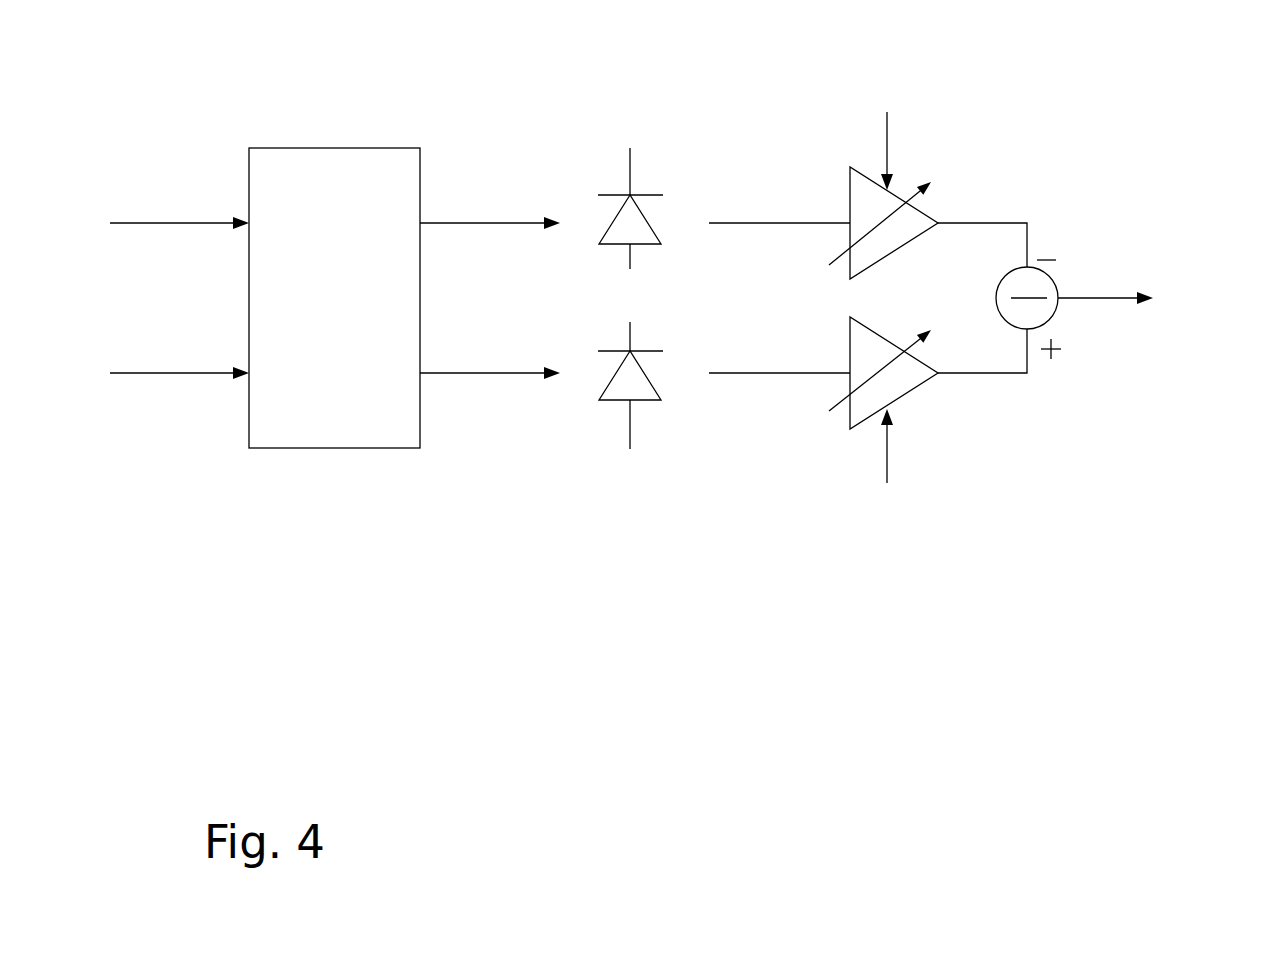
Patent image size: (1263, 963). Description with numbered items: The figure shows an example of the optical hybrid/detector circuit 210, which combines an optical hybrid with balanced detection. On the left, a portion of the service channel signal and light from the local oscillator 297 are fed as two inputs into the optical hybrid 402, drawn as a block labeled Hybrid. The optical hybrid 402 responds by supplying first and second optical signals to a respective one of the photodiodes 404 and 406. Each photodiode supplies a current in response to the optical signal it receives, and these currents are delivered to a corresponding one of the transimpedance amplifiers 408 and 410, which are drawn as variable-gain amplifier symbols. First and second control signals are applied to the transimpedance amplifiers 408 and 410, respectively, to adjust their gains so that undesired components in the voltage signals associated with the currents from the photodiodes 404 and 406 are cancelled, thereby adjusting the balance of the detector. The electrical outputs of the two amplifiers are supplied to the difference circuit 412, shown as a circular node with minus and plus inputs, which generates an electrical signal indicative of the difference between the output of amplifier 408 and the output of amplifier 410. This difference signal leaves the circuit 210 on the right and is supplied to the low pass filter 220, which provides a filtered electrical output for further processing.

The optical hybrid/detector circuit 210 is at (904, 647).
The optical hybrid 402 is at (348, 148).
The photodiode 404 is at (619, 196).
The photodiode 406 is at (641, 401).
The transimpedance amplifier 408 is at (880, 185).
The transimpedance amplifier 410 is at (909, 390).
The difference circuit 412 is at (1054, 283).
The low pass filter circuit 220 is at (1133, 295).
The local oscillator 297 is at (179, 348).